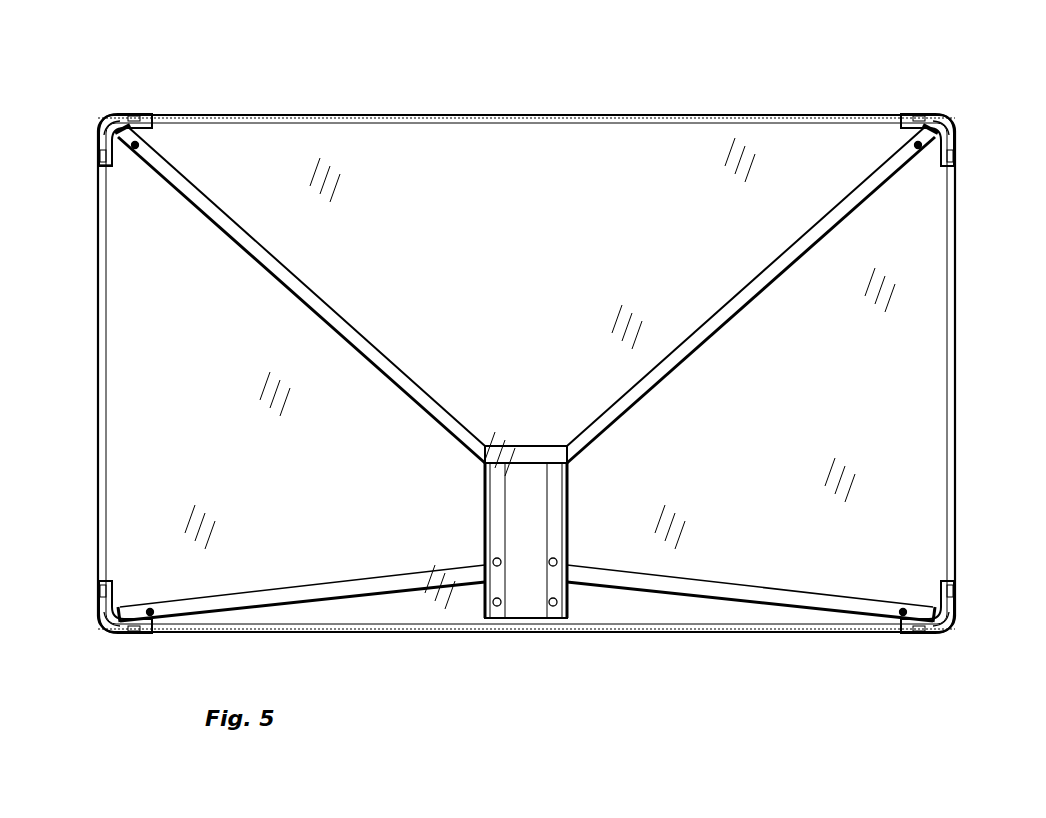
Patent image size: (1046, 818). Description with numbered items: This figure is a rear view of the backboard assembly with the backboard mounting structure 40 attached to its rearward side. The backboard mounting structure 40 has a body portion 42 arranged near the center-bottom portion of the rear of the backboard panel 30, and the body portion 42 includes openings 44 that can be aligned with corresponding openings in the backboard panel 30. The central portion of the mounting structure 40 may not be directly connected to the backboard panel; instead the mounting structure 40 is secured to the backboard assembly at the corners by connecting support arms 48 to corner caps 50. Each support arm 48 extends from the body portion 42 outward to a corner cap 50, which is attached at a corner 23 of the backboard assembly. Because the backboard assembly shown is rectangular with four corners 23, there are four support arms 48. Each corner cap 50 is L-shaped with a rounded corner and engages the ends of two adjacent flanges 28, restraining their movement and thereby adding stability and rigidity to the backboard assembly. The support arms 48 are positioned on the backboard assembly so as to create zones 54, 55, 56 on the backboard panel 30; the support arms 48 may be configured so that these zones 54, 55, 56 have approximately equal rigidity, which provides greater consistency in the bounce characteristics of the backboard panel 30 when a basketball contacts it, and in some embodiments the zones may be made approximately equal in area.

The corner 23 is at (97, 112).
The flange 28 is at (334, 120).
The backboard panel 30 is at (614, 150).
The backboard mounting structure 40 is at (570, 572).
The body portion 42 is at (493, 583).
The openings 44 is at (498, 607).
The support arm 48 is at (256, 258).
The corner cap 50 is at (131, 120).
The zone 54 is at (190, 419).
The zone 55 is at (540, 259).
The zone 56 is at (767, 437).